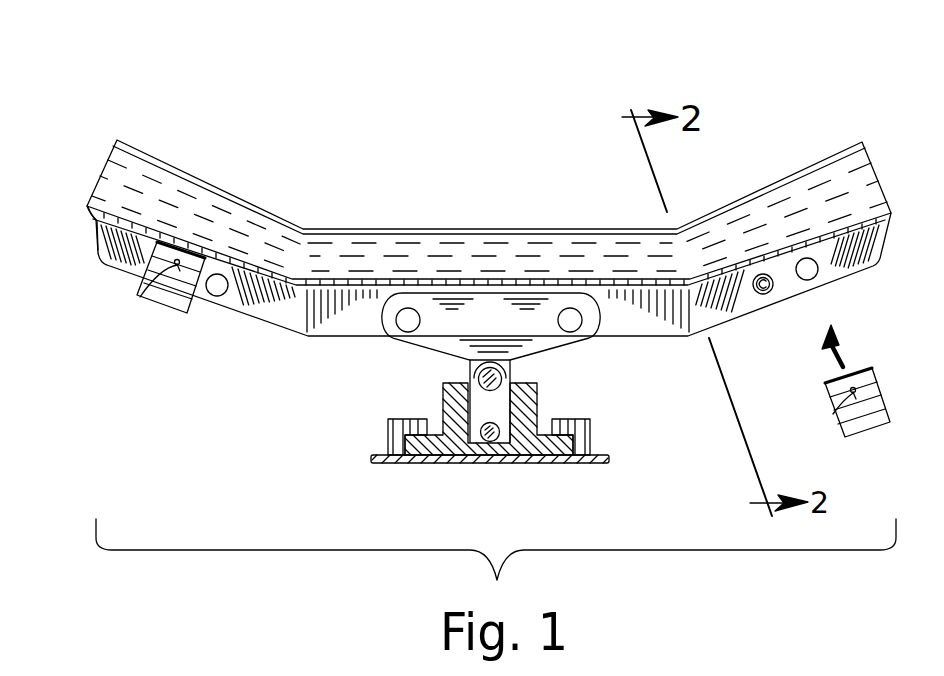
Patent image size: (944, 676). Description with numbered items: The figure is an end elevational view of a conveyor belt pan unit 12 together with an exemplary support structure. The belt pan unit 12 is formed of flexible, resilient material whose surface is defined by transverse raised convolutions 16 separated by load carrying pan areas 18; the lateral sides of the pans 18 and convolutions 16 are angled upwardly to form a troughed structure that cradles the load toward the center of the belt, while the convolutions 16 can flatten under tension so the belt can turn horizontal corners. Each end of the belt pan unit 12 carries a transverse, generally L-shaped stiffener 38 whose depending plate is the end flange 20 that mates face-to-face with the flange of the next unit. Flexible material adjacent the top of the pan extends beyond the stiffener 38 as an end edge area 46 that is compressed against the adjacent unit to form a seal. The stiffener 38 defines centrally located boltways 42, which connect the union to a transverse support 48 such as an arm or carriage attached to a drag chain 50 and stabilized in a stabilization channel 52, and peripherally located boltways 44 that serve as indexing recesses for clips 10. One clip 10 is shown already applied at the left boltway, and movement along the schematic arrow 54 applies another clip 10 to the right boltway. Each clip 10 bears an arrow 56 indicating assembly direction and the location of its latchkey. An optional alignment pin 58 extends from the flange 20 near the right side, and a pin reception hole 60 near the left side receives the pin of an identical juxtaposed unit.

The clip 10 is at (167, 307).
The belt pan unit 12 is at (148, 100).
The convolution 16 is at (243, 197).
The pan area 18 is at (513, 278).
The end flange 20 is at (302, 312).
The stiffener 38 is at (85, 210).
The centrally located boltway 42 is at (408, 308).
The peripherally located boltway 44 is at (808, 270).
The extending end edge area 46 is at (93, 200).
The transverse support 48 is at (547, 353).
The drag chain 50 is at (478, 372).
The stabilization channel 52 is at (390, 420).
The schematic arrow 54 is at (838, 359).
The arrow 56 is at (140, 297).
The alignment pin 58 is at (766, 294).
The pin reception hole 60 is at (217, 290).